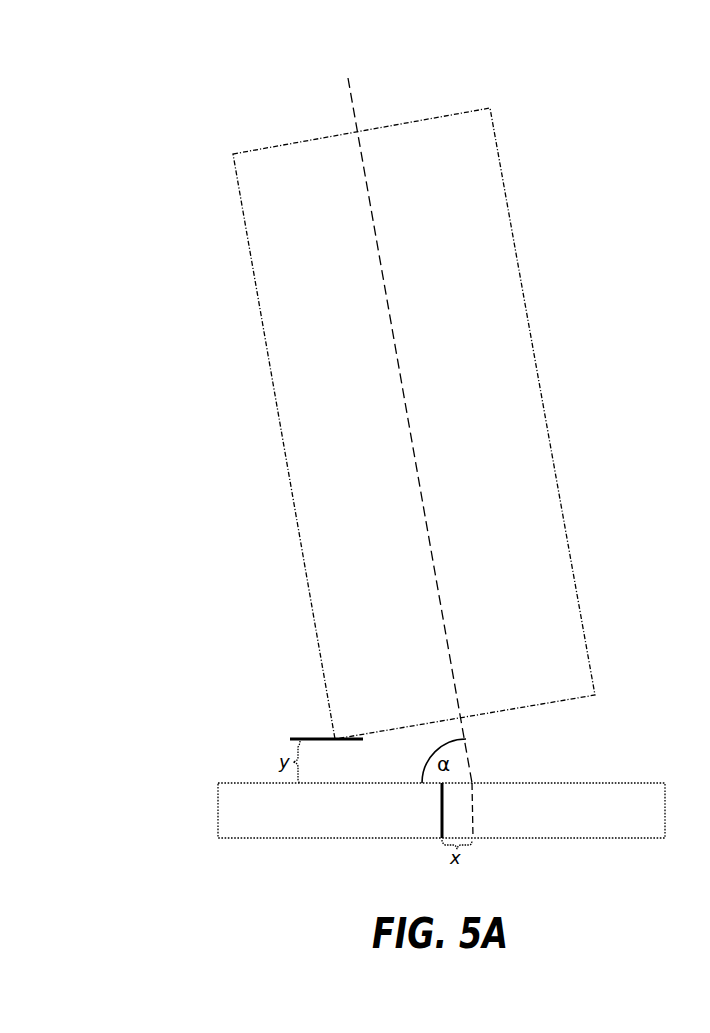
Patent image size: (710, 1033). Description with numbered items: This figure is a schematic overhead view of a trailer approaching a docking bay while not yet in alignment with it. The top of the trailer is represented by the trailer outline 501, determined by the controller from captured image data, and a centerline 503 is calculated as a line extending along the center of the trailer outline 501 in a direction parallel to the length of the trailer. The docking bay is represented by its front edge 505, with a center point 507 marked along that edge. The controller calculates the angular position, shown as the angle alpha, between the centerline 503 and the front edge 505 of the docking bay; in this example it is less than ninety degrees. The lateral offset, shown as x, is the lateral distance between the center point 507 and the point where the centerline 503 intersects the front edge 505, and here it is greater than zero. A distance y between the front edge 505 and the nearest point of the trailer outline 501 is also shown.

The trailer outline 501 is at (252, 262).
The centerline 503 is at (348, 98).
The front edge of the docking bay 505 is at (231, 776).
The center point of the docking bay 507 is at (441, 824).